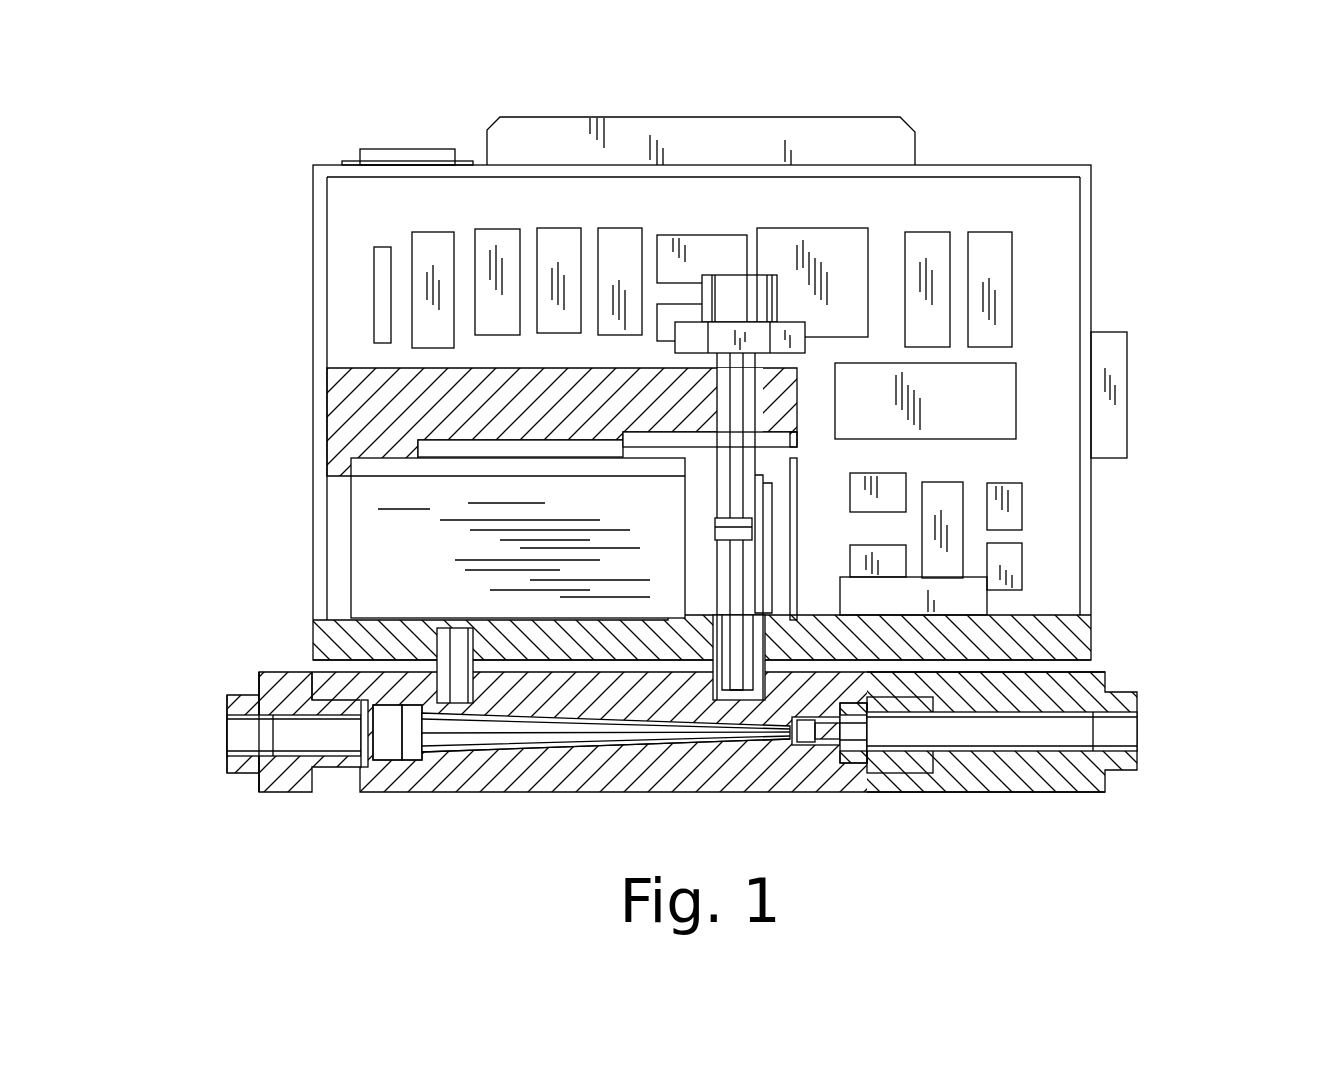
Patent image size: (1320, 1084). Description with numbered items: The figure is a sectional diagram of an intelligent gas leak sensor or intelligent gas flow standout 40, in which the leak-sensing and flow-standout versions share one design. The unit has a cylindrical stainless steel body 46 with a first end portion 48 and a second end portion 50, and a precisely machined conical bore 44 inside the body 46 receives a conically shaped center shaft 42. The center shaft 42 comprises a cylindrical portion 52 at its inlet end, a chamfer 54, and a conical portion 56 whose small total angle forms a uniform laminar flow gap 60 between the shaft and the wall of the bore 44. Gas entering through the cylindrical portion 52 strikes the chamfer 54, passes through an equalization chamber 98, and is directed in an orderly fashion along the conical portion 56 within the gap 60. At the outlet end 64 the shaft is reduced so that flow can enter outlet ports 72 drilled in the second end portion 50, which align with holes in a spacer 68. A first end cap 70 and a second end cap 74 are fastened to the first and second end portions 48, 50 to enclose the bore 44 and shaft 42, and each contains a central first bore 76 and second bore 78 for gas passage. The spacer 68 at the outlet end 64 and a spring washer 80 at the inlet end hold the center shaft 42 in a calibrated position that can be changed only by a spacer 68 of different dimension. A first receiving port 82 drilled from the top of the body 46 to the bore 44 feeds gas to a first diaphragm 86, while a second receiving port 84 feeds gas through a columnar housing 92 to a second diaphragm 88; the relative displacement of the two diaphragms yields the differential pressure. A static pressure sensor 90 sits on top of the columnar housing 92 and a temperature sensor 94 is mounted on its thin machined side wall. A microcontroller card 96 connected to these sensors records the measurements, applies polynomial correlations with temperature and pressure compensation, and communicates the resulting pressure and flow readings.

The intelligent gas leak sensor / intelligent gas flow standout 40 is at (1238, 153).
The center shaft 42 is at (505, 755).
The conical bore 44 is at (688, 750).
The body 46 is at (912, 793).
The first end portion 48 is at (332, 684).
The second end portion 50 is at (915, 677).
The cylindrical portion 52 is at (386, 742).
The chamfer 54 is at (413, 742).
The conical portion 56 is at (610, 737).
The laminar flow gap 60 is at (556, 723).
The outlet end 64 is at (774, 750).
The spacer 68 is at (849, 767).
The first end cap 70 is at (257, 776).
The outlet ports 72 is at (830, 713).
The second end cap 74 is at (1092, 694).
The first bore 76 is at (248, 733).
The second bore 78 is at (1115, 737).
The spring washer 80 is at (357, 776).
The first receiving port 82 is at (412, 702).
The second receiving port 84 is at (743, 688).
The first diaphragm 86 is at (480, 615).
The second diaphragm 88 is at (470, 442).
The static pressure sensor 90 is at (730, 262).
The columnar housing 92 is at (762, 540).
The temperature sensor 94 is at (733, 520).
The microcontroller card 96 is at (885, 242).
The equalization chamber 98 is at (445, 662).